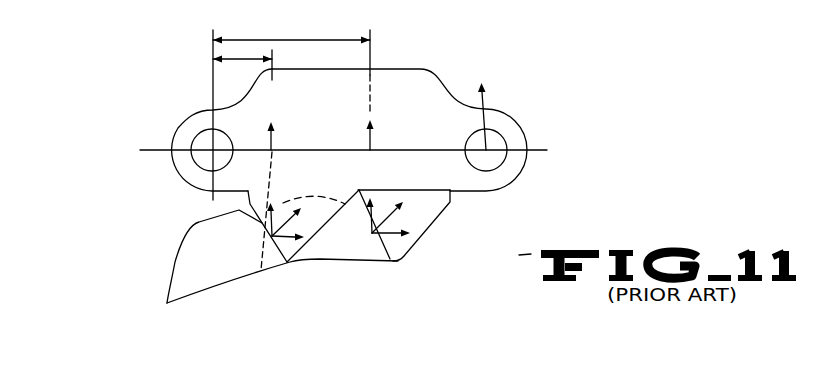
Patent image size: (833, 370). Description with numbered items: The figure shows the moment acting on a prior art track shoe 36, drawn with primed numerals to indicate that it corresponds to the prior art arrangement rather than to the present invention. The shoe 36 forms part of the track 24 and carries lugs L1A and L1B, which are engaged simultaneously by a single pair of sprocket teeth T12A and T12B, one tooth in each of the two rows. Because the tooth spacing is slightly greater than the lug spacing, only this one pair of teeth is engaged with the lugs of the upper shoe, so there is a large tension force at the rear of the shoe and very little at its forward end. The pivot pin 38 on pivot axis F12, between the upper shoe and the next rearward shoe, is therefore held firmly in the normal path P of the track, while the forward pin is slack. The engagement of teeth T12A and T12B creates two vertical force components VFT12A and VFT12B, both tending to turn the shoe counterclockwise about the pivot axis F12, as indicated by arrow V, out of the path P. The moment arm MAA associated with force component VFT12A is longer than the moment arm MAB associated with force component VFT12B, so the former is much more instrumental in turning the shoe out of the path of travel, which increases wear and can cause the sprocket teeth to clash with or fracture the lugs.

The track shoe 36 is at (420, 69).
The pivot pin 38 is at (196, 161).
The pivot axis F12 is at (212, 149).
The path P is at (547, 150).
The moment arm MAA is at (297, 33).
The moment arm MAB is at (233, 62).
The arrow V is at (484, 99).
The vertical force component VFT12A is at (375, 213).
The vertical force component VFT12B is at (276, 222).
The sprocket tooth T12B is at (203, 223).
The lug L1B is at (192, 243).
The track 24 is at (158, 291).
The lug L1A is at (437, 220).
The sprocket tooth T12A is at (359, 257).